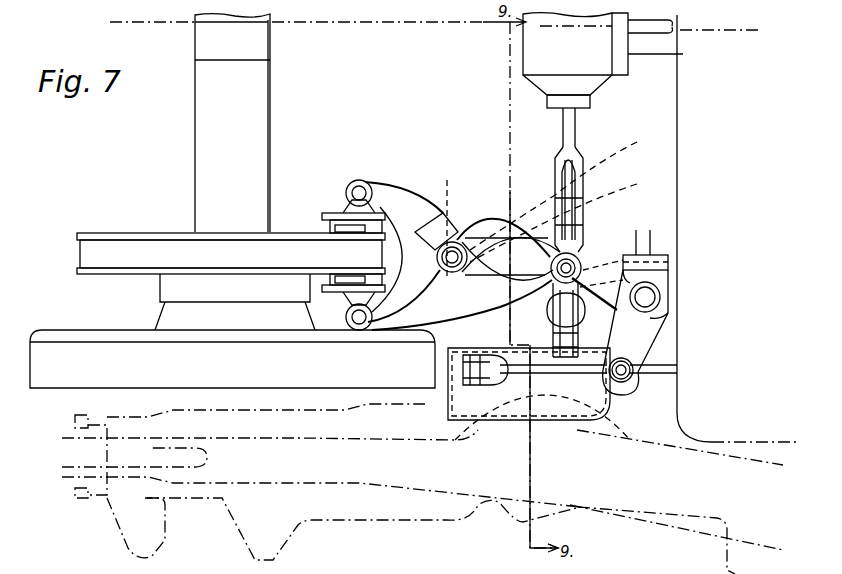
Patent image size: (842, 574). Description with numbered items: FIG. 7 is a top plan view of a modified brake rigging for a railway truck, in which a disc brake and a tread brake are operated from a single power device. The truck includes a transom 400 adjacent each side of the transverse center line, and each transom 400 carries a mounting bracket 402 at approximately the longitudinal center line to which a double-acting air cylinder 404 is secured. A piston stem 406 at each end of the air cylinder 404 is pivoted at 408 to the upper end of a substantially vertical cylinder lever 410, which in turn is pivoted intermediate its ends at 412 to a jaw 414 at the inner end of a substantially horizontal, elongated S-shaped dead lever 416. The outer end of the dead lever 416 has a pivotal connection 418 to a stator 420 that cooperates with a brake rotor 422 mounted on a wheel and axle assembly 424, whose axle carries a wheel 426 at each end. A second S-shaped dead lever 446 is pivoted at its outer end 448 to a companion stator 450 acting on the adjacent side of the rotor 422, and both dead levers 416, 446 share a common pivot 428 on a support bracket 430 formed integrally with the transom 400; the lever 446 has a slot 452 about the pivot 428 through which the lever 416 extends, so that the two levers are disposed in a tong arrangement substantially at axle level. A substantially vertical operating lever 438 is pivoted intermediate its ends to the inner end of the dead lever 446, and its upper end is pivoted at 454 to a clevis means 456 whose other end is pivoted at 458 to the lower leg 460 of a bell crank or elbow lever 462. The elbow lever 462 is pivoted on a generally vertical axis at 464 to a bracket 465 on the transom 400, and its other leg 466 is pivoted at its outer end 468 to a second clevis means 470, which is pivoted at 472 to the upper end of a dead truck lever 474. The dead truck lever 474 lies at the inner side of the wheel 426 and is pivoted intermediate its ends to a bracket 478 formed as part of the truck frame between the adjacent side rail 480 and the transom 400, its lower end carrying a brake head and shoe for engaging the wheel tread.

The transom 400 is at (677, 194).
The mounting bracket 402 is at (673, 42).
The air cylinder 404 is at (545, 62).
The piston stem 406 is at (562, 122).
The pivot 408 is at (566, 188).
The cylinder lever 410 is at (561, 192).
The pivot 412 is at (565, 218).
The jaw 414 is at (577, 237).
The dead lever 416 is at (486, 214).
The pivotal connection 418 is at (359, 330).
The stator 420 is at (327, 297).
The brake rotor 422 is at (92, 274).
The wheel and axle assembly 424 is at (195, 153).
The wheel 426 is at (52, 388).
The common pivot 428 is at (452, 272).
The support bracket 430 is at (530, 268).
The operating lever 438 is at (612, 380).
The dead lever 446 is at (487, 298).
The pivotal connection 448 is at (364, 187).
The stator 450 is at (322, 218).
The slot 452 is at (436, 218).
The pivot 454 is at (620, 321).
The clevis means 456 is at (582, 320).
The pivot 458 is at (580, 260).
The lower leg 460 is at (668, 267).
The elbow lever 462 is at (662, 293).
The pivot 464 is at (650, 299).
The bracket 465 is at (650, 254).
The leg 466 is at (640, 352).
The pivot 468 is at (633, 374).
The clevis means 470 is at (575, 375).
The pivot 472 is at (478, 386).
The dead truck lever 474 is at (487, 350).
The bracket 478 is at (549, 398).
The side rail 480 is at (645, 505).